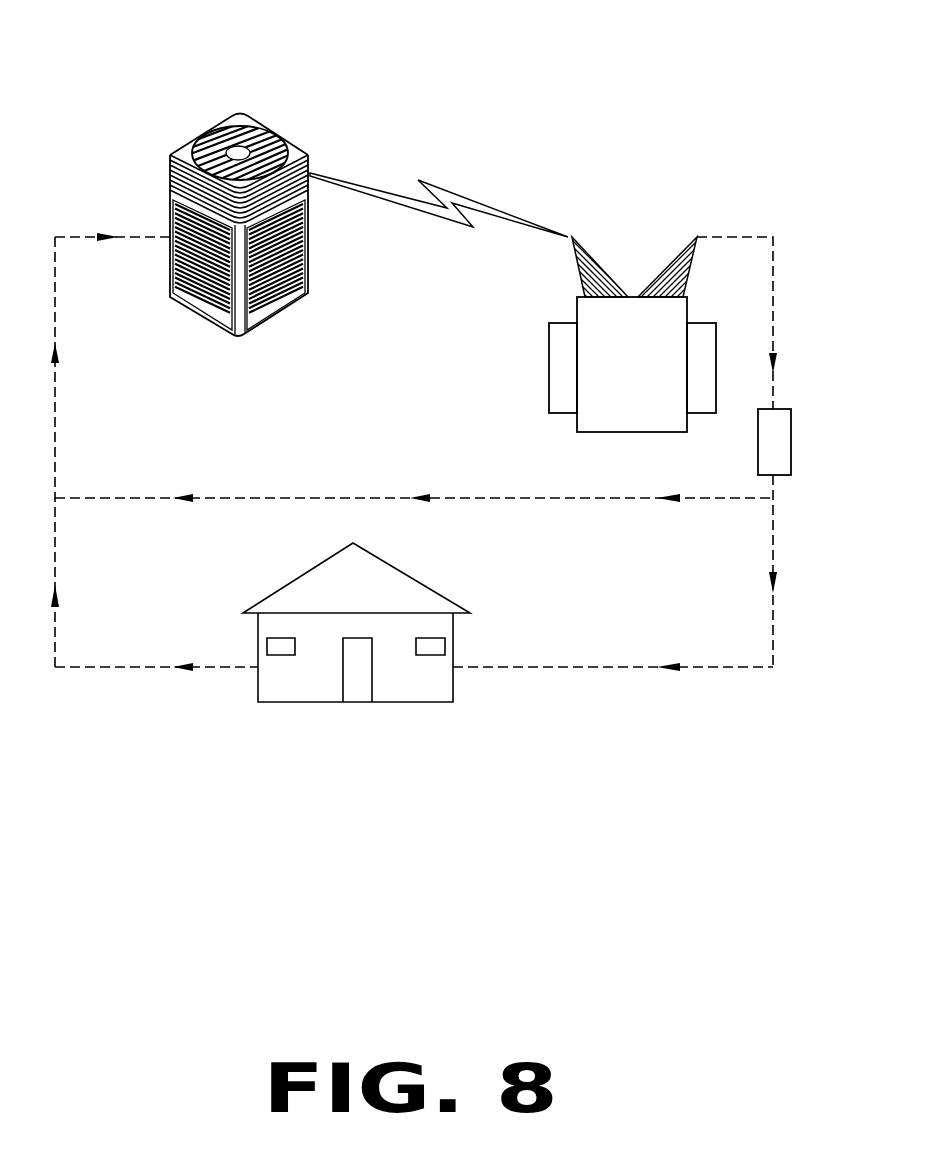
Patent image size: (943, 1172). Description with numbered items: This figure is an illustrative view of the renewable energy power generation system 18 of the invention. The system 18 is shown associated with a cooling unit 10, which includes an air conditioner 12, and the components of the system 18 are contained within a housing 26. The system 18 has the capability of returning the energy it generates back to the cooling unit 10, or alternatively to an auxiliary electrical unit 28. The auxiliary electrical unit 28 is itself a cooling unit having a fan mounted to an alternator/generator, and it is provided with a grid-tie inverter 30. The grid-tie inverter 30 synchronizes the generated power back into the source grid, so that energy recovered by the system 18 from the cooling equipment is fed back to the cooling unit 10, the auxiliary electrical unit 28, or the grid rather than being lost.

The cooling unit 10 is at (263, 251).
The air conditioner 12 is at (170, 280).
The renewable energy power generation system 18 is at (340, 138).
The housing 26 is at (168, 170).
The auxiliary electrical unit 28 is at (549, 367).
The grid-tie inverter 30 is at (792, 437).